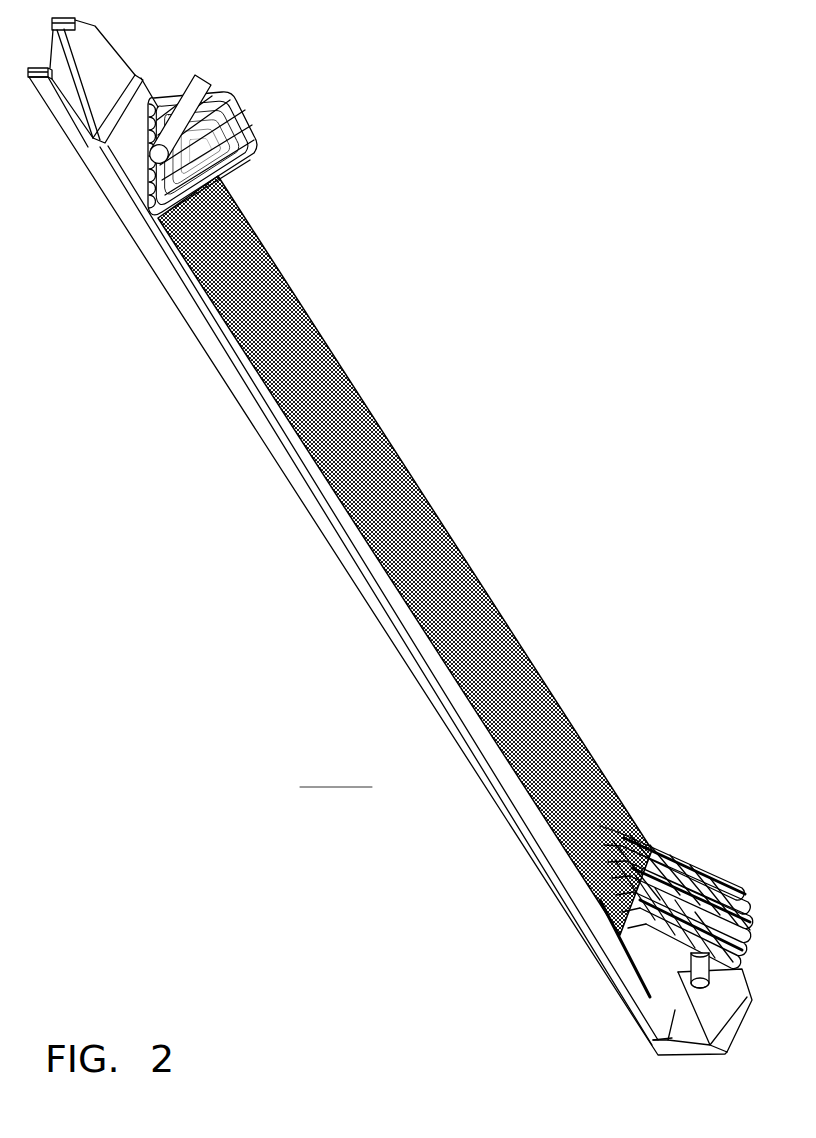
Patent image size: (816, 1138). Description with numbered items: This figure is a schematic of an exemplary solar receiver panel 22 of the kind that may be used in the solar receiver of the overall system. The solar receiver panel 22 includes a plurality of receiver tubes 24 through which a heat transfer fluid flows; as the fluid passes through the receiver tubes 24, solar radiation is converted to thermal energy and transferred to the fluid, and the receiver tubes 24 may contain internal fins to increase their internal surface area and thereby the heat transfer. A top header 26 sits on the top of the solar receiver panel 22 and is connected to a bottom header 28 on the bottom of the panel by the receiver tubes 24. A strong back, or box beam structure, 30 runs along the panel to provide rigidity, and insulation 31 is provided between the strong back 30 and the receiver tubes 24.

The solar receiver panel 22 is at (483, 470).
The receiver tubes 24 is at (243, 170).
The top header 26 is at (200, 82).
The bottom header 28 is at (700, 988).
The strong back 30 is at (333, 545).
The insulation 31 is at (420, 647).